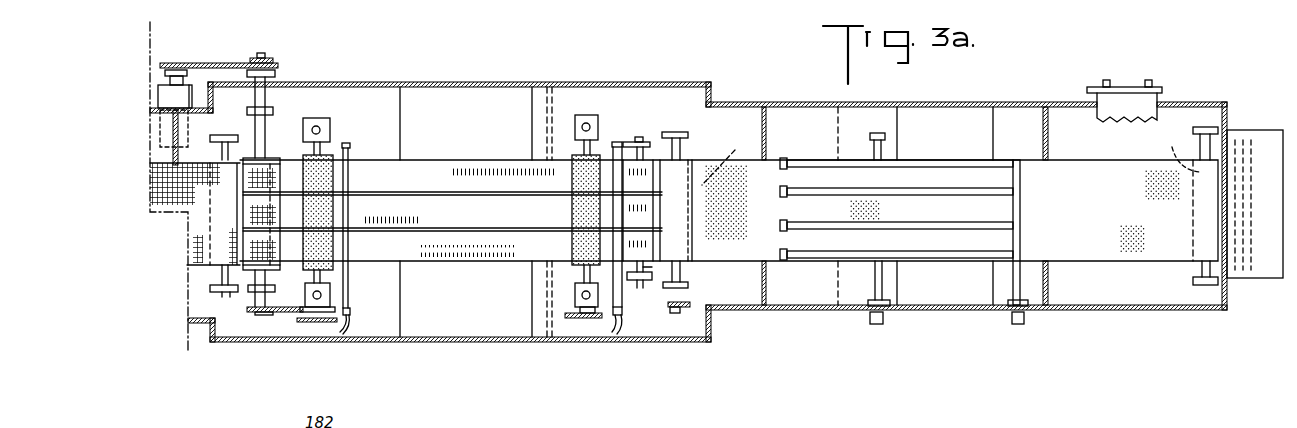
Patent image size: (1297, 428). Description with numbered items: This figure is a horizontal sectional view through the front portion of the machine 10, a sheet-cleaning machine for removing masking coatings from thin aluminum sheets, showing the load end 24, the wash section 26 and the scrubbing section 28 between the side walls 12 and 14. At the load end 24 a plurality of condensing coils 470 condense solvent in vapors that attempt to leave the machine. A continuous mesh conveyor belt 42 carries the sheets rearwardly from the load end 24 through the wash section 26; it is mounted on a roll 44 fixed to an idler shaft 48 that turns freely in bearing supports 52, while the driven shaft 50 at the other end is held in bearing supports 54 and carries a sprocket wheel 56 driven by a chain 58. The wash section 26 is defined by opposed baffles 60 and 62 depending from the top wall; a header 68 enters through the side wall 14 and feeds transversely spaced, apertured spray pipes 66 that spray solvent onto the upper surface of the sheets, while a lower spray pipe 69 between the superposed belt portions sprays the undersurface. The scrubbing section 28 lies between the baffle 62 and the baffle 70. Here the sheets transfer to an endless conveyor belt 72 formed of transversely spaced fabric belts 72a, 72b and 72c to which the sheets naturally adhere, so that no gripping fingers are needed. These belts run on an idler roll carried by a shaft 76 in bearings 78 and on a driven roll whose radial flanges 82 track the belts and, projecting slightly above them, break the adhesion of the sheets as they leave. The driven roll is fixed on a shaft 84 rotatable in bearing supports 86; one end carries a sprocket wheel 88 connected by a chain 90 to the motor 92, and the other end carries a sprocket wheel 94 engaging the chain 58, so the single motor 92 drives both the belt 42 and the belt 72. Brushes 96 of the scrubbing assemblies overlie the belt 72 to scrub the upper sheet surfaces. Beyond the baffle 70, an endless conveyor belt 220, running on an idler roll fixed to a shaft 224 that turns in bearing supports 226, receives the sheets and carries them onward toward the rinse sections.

The machine 10 is at (1141, 319).
The side wall 12 is at (553, 82).
The side wall 14 is at (438, 340).
The load end 24 is at (1277, 126).
The wash section 26 is at (1013, 111).
The scrubbing section 28 is at (483, 87).
The conveyor belt 42 is at (1110, 148).
The roll 44 is at (716, 165).
The idler shaft 48 is at (1202, 268).
The driven shaft 50 is at (690, 152).
The bearing supports 52 is at (1208, 128).
The bearing supports 54 is at (676, 132).
The sprocket wheel 56 is at (690, 304).
The chain 58 is at (486, 290).
The baffle 60 is at (1048, 298).
The baffle 62 is at (767, 300).
The spray pipes 66 is at (935, 190).
The header 68 is at (1020, 210).
The lower spray pipe 69 is at (875, 290).
The baffle 70 is at (175, 155).
The endless conveyor belt 72 is at (407, 211).
The fabric belt 72a is at (450, 255).
The fabric belt 72b is at (478, 205).
The fabric belt 72c is at (450, 170).
The shaft 76 is at (646, 268).
The bearings 78 is at (635, 140).
The flanges 82 is at (272, 165).
The shaft 84 is at (265, 140).
The bearing supports 86 is at (273, 110).
The sprocket wheel 88 is at (270, 58).
The chain 90 is at (237, 63).
The motor 92 is at (178, 96).
The sprocket wheel 94 is at (250, 302).
The brush 96 is at (330, 155).
The endless conveyor belt 220 is at (183, 170).
The shaft 224 is at (222, 272).
The bearing supports 226 is at (238, 140).
The condensing coils 470 is at (1120, 100).